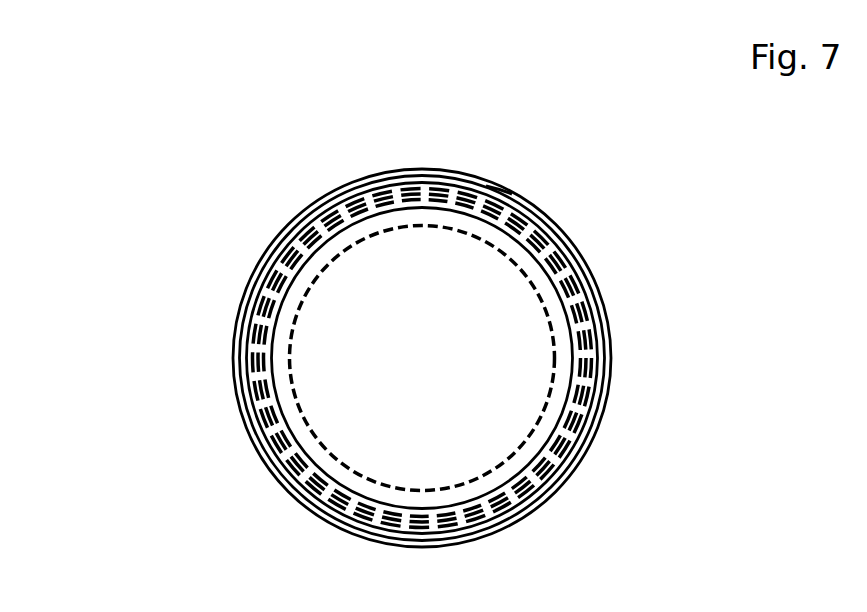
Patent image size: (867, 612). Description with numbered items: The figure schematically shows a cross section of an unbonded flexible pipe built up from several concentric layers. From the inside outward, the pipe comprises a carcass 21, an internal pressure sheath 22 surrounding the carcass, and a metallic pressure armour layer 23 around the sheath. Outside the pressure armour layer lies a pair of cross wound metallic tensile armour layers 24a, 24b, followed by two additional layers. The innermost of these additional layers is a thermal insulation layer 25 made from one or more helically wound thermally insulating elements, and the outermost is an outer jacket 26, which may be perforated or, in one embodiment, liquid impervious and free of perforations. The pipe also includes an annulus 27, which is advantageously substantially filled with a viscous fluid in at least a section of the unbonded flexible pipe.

The carcass 21 is at (540, 341).
The internal pressure sheath 22 is at (370, 236).
The metallic pressure armour layer 23 is at (568, 454).
The cross wound metallic tensile armour layer 24a is at (593, 275).
The cross wound metallic tensile armour layer 24b is at (570, 258).
The thermal insulation layer 25 is at (300, 495).
The outer jacket 26 is at (244, 447).
The annulus 27 is at (510, 187).